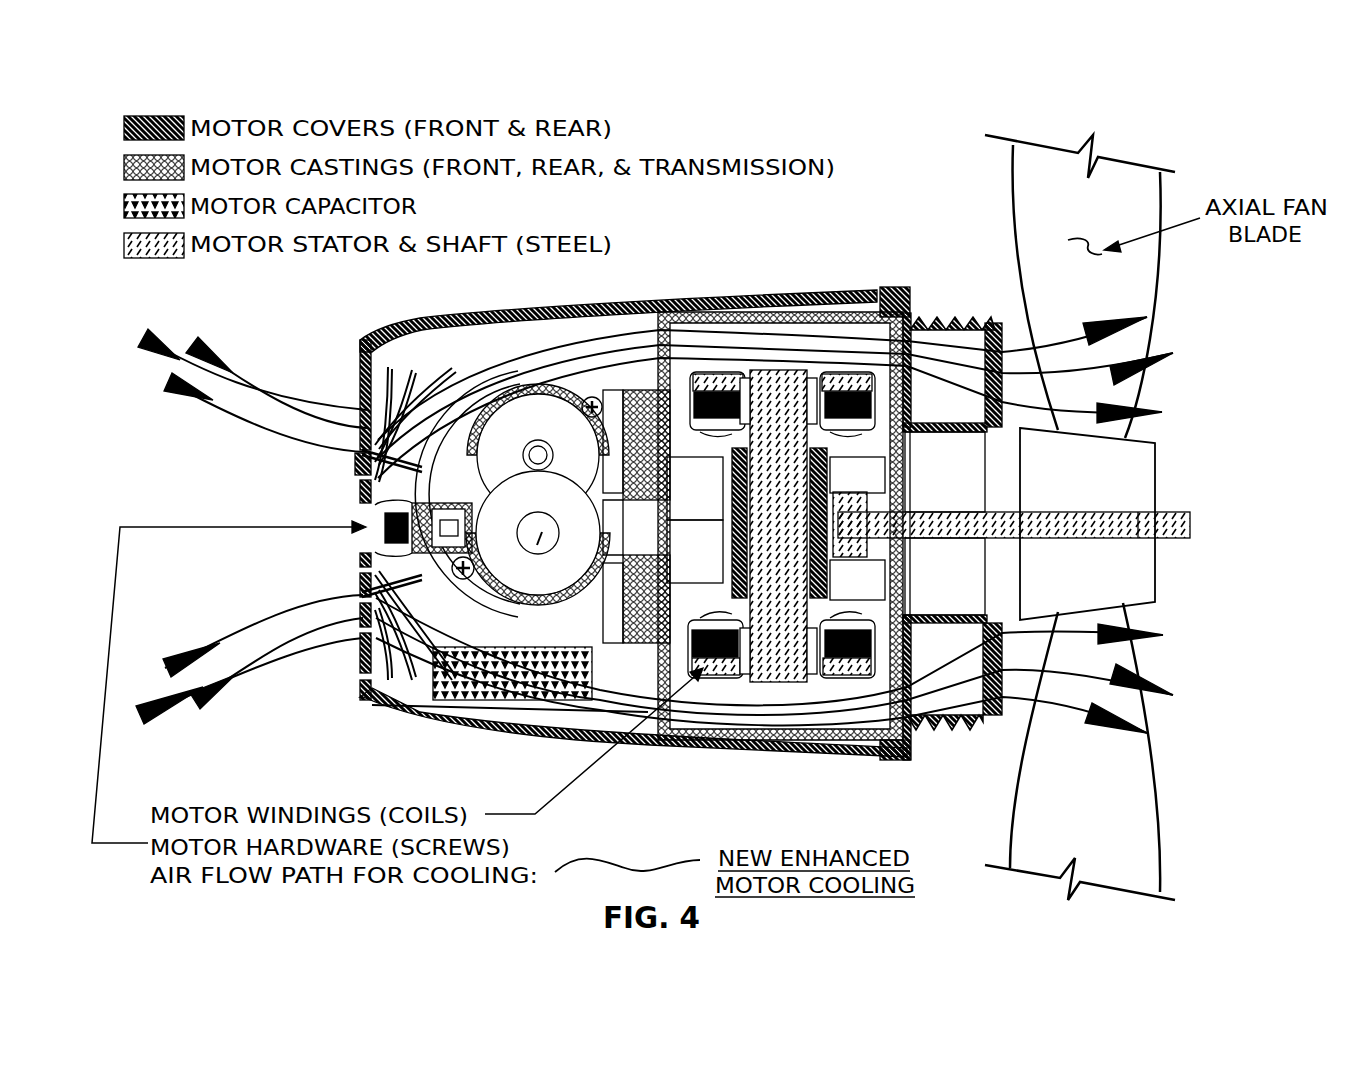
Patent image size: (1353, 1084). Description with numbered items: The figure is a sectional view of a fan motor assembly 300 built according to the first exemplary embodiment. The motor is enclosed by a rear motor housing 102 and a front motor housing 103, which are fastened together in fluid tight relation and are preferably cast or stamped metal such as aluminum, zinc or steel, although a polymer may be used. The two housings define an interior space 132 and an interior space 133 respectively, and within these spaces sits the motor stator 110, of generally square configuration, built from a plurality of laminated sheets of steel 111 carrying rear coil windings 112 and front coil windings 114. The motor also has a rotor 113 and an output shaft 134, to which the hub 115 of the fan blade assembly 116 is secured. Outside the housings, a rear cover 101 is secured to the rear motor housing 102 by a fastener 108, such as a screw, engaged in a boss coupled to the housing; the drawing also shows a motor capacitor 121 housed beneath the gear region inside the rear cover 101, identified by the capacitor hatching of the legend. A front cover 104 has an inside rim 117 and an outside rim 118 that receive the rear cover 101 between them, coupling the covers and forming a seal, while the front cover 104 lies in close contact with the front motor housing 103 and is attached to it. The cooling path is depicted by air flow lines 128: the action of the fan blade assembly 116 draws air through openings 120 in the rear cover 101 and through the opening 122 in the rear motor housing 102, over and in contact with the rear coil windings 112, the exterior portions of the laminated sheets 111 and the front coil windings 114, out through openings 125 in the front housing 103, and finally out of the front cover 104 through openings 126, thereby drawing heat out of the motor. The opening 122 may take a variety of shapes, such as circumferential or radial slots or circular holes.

The fan motor assembly 300 is at (770, 135).
The rear cover 101 is at (490, 313).
The rear motor housing 102 is at (681, 312).
The front motor housing 103 is at (792, 306).
The front cover 104 is at (983, 322).
The fastener 108 is at (365, 523).
The motor stator 110 is at (778, 526).
The laminated sheets of steel 111 is at (730, 583).
The rear coil windings 112 is at (696, 458).
The rotor 113 is at (882, 560).
The front coil windings 114 is at (900, 420).
The hub 115 is at (1143, 466).
The fan blade assembly 116 is at (1178, 563).
The inside rim 117 is at (915, 300).
The outside rim 118 is at (898, 287).
The openings 120 is at (366, 356).
The motor capacitor 121 is at (487, 702).
The opening 122 is at (668, 745).
The openings 125 is at (905, 415).
The openings 126 is at (1010, 620).
The air flow lines 128 is at (240, 440).
The interior space 132 is at (743, 340).
The interior space 133 is at (845, 330).
The output shaft 134 is at (1085, 520).